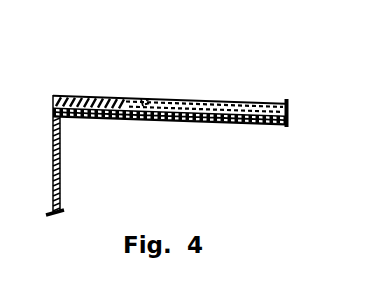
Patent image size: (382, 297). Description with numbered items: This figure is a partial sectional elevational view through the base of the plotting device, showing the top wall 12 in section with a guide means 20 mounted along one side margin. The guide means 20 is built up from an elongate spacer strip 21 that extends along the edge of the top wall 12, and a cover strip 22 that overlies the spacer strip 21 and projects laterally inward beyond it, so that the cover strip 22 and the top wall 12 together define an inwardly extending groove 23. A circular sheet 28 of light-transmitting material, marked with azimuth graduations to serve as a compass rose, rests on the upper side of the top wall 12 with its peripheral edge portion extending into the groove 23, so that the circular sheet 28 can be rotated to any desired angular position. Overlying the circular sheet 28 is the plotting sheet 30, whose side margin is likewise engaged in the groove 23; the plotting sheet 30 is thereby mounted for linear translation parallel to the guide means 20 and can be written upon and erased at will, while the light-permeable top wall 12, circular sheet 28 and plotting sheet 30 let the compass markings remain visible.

The top wall 12 is at (169, 98).
The guide means 20 is at (121, 94).
The spacer strip 21 is at (48, 108).
The cover strip 22 is at (147, 103).
The groove 23 is at (129, 70).
The circular sheet 28 is at (287, 99).
The plotting sheet 30 is at (169, 82).